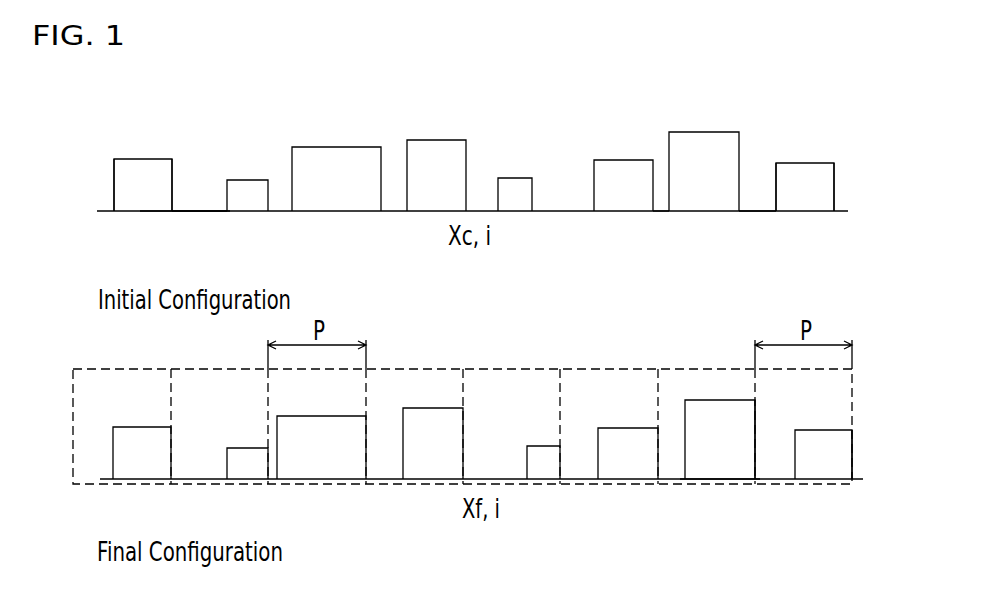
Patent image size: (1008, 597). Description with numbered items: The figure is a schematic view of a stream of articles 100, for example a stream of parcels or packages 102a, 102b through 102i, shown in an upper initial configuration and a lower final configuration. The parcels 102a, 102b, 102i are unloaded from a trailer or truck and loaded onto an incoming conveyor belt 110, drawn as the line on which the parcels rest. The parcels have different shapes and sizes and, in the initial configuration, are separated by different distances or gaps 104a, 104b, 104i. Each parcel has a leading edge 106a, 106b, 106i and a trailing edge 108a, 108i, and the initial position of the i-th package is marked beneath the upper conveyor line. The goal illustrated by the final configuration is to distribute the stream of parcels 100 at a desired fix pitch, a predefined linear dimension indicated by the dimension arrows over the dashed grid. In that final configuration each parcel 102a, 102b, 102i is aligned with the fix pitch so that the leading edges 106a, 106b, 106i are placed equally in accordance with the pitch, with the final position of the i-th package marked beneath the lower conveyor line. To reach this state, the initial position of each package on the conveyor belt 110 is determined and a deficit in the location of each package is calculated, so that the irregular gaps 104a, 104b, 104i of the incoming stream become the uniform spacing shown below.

The stream of articles 100 is at (112, 145).
The parcel 102i is at (143, 158).
The parcel 102b is at (696, 130).
The parcel 102a is at (805, 160).
The gap 104i is at (204, 193).
The gap 104b is at (663, 197).
The gap 104a is at (758, 197).
The leading edge 106i is at (173, 184).
The leading edge 106a is at (834, 185).
The leading edge 106b is at (755, 438).
The trailing edge 108i is at (114, 183).
The trailing edge 108a is at (775, 185).
The incoming conveyor belt 110 is at (179, 212).